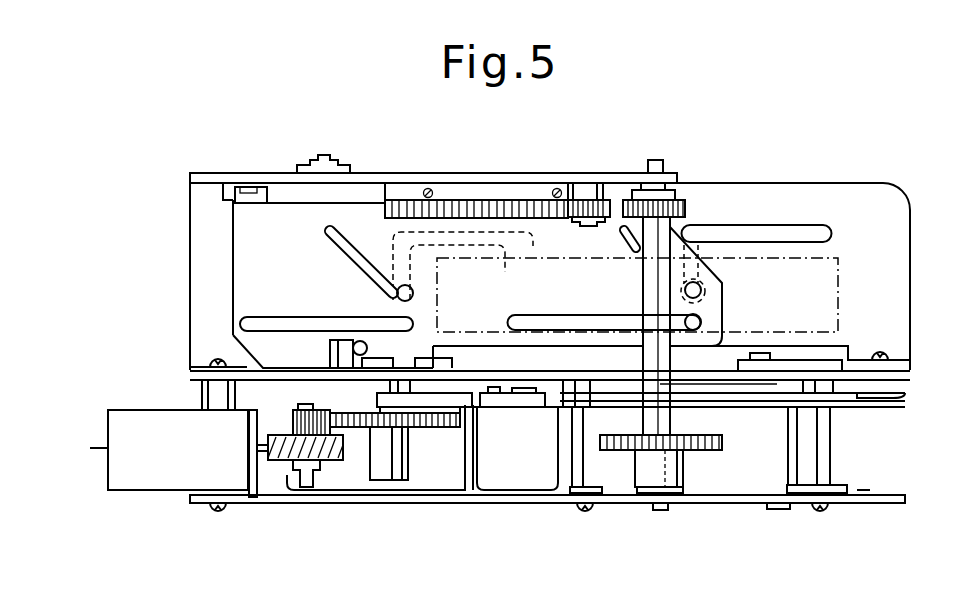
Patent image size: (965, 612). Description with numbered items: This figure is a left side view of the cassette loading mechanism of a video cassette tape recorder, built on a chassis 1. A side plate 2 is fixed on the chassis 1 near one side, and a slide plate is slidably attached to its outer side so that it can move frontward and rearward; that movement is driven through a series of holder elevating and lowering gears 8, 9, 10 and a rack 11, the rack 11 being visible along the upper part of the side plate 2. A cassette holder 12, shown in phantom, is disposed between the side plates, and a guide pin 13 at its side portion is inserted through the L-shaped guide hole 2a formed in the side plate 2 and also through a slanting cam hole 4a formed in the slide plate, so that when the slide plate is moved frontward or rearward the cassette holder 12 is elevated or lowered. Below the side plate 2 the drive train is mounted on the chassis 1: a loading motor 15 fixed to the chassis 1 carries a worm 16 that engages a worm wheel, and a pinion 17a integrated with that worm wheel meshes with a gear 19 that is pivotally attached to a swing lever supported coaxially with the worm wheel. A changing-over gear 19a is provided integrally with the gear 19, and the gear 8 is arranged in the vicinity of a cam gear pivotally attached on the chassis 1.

The chassis 1 is at (908, 385).
The side plate 2 is at (912, 233).
The L-shaped guide hole 2a is at (782, 232).
The slanting cam hole 4a is at (360, 272).
The holder elevating/lowering gear 8 is at (714, 452).
The holder elevating/lowering gear 9 is at (687, 206).
The holder elevating/lowering gear 10 is at (586, 196).
The rack 11 is at (484, 198).
The cassette holder 12 is at (840, 302).
The guide pin 13 is at (415, 293).
The loading motor 15 is at (170, 480).
The worm 16 is at (338, 470).
The pinion 17a is at (300, 404).
The gear 19 is at (445, 430).
The changing-over gear 19a is at (395, 470).